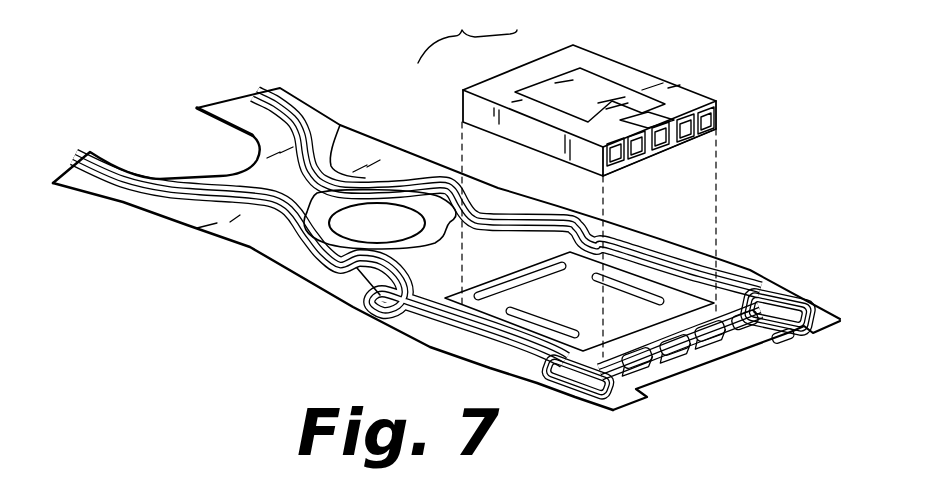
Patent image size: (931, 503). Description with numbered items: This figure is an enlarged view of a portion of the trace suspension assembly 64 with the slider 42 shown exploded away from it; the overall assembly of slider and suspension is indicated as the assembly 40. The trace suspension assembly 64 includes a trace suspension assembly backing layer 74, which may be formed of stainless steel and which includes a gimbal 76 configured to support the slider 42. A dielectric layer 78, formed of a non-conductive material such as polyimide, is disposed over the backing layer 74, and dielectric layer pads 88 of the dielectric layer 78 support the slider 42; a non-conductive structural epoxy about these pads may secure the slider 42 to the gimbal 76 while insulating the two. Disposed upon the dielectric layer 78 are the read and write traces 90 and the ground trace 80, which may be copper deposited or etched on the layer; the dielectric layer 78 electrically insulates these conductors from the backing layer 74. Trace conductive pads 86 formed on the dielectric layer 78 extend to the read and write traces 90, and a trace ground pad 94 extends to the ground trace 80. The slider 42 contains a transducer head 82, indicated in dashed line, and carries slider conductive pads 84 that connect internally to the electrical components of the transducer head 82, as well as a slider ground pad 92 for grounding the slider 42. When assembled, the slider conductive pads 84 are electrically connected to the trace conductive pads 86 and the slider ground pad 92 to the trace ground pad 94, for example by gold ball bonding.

The electronic module assembly 40 is at (467, 34).
The slider 42 is at (540, 66).
The trace suspension assembly 64 is at (416, 136).
The trace suspension assembly backing layer 74 is at (679, 253).
The gimbal 76 is at (480, 284).
The dielectric layer 78 is at (68, 180).
The ground trace 80 is at (717, 350).
The transducer head 82 is at (656, 104).
The slider conductive pads 84 is at (712, 127).
The trace conductive pads 86 is at (648, 352).
The dielectric layer pads 88 is at (527, 313).
The read and write traces 90 is at (793, 294).
The slider ground pad 92 is at (662, 150).
The trace ground pad 94 is at (688, 350).